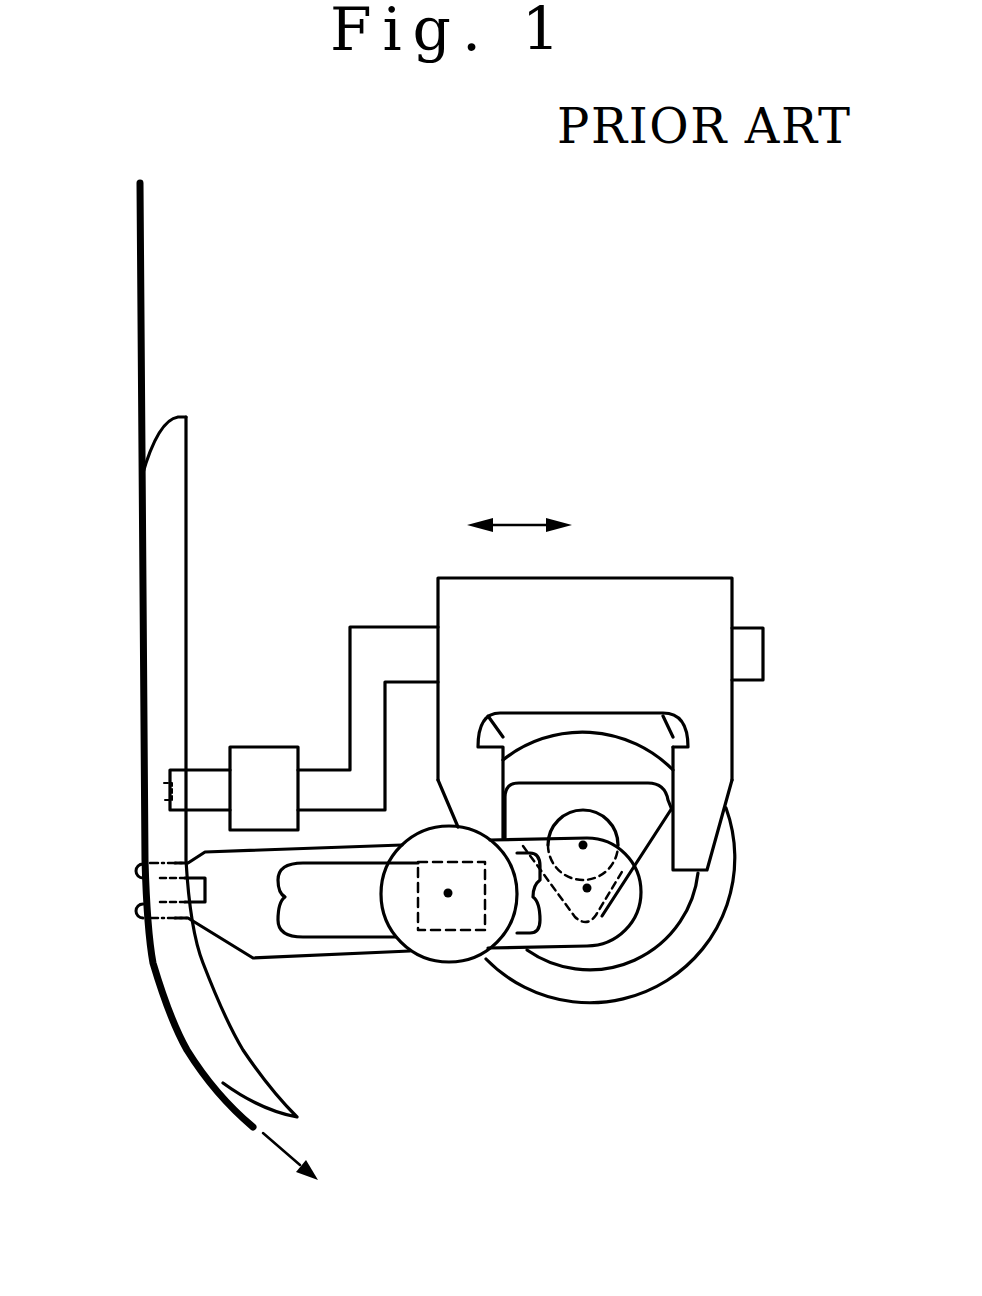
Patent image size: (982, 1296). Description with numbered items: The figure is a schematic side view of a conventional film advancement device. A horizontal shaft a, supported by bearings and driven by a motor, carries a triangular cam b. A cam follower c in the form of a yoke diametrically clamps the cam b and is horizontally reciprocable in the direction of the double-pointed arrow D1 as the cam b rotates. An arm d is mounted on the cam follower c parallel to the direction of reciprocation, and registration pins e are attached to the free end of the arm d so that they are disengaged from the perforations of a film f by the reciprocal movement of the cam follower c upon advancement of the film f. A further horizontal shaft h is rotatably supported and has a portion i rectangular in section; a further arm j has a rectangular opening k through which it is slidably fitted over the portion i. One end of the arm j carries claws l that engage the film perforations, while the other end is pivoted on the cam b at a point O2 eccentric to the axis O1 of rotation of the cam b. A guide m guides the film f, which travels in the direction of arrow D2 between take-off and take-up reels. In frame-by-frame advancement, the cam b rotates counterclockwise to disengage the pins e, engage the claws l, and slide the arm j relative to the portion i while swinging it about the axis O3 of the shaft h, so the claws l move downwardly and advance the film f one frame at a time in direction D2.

The film f is at (137, 292).
The guide m is at (172, 620).
The registration pins e is at (161, 797).
The arm d is at (388, 645).
The cam follower c is at (651, 578).
The triangular cam b is at (630, 797).
The horizontal shaft a is at (667, 817).
The further arm j is at (270, 937).
The rectangular opening k is at (338, 913).
The further horizontal shaft h is at (407, 910).
The rectangular portion i is at (430, 968).
The claws l is at (140, 872).
The axis of rotation of the cam O1 is at (587, 847).
The pivot point O2 is at (587, 888).
The axis of the shaft O3 is at (450, 895).
The direction of reciprocation D1 is at (519, 523).
The direction of film travel D2 is at (275, 1150).